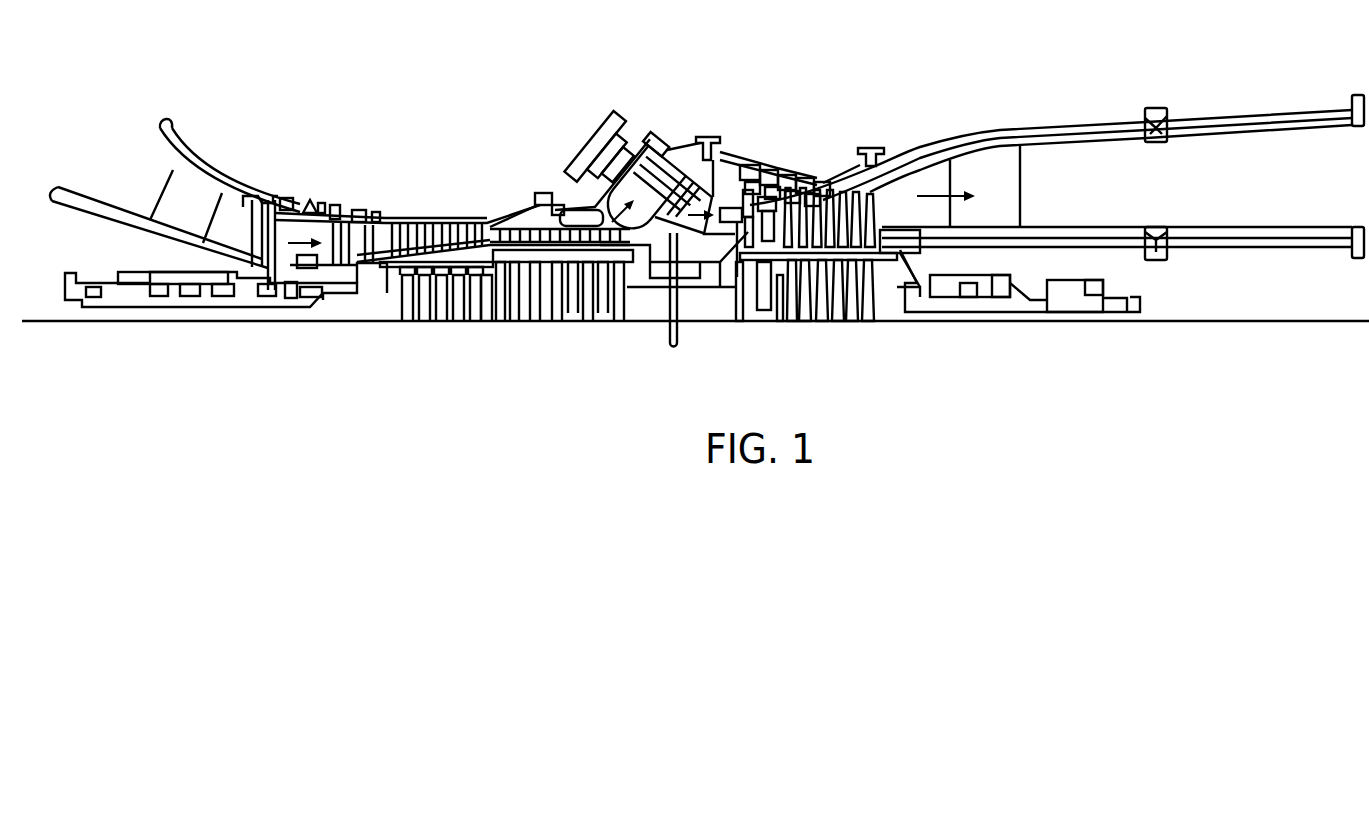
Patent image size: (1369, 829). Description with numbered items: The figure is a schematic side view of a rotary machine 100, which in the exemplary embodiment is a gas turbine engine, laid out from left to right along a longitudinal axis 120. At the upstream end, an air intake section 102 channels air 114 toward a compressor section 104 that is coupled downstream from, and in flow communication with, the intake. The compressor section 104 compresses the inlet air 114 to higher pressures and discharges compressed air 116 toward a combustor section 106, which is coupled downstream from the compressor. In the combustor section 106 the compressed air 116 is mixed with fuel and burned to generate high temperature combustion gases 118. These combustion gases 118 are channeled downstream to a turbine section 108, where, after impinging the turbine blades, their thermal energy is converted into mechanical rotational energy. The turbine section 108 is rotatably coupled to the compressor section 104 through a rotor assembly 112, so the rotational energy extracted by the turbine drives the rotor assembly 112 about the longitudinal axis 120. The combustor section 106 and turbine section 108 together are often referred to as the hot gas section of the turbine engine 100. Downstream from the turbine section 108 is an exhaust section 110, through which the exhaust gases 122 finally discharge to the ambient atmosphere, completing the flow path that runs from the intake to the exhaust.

The rotary machine 100 is at (830, 75).
The air intake section 102 is at (165, 118).
The compressor section 104 is at (473, 323).
The combustor section 106 is at (633, 122).
The turbine section 108 is at (797, 255).
The exhaust section 110 is at (1242, 115).
The rotor assembly 112 is at (335, 323).
The air 114 is at (291, 210).
The compressed air 116 is at (600, 205).
The combustion gases 118 is at (700, 200).
The longitudinal axis 120 is at (1248, 322).
The exhaust gases 122 is at (930, 192).